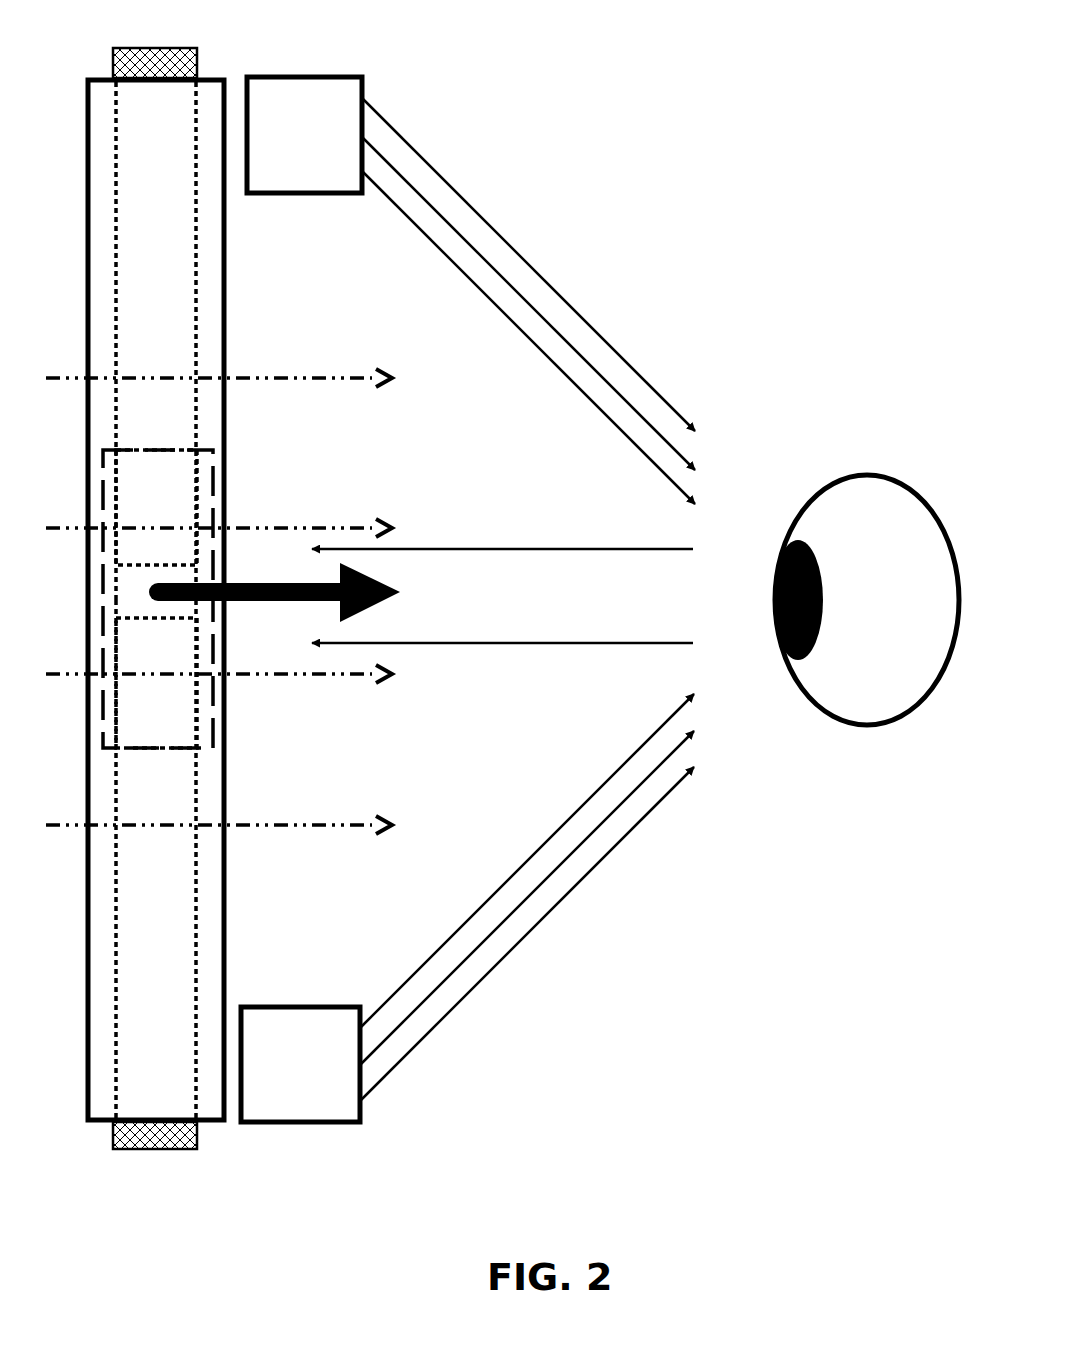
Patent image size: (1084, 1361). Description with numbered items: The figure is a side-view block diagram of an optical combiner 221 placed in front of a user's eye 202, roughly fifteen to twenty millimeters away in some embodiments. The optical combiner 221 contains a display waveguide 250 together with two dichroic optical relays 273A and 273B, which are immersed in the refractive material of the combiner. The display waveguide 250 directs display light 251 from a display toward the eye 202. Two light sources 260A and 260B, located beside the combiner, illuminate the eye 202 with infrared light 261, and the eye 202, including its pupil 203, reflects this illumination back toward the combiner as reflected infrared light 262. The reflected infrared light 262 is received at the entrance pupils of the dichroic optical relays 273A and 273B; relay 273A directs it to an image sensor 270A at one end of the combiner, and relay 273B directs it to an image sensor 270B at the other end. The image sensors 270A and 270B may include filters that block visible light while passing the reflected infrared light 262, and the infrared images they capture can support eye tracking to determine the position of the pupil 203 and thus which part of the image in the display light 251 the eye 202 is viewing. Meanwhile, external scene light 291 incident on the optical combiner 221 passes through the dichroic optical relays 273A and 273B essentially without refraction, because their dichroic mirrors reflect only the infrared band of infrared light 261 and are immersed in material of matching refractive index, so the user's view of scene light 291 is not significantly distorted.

The eye 202 is at (899, 466).
The pupil 203 is at (817, 557).
The optical combiner 221 is at (226, 984).
The display waveguide 250 is at (214, 450).
The display light 251 is at (368, 603).
The light source 260A is at (304, 135).
The light source 260B is at (300, 1064).
The infrared light 261 is at (550, 599).
The reflected infrared light 262 is at (502, 596).
The image sensor 270A is at (198, 64).
The image sensor 270B is at (198, 1136).
The dichroic optical relay 273A is at (197, 318).
The dichroic optical relay 273B is at (197, 917).
The scene light 291 is at (219, 605).